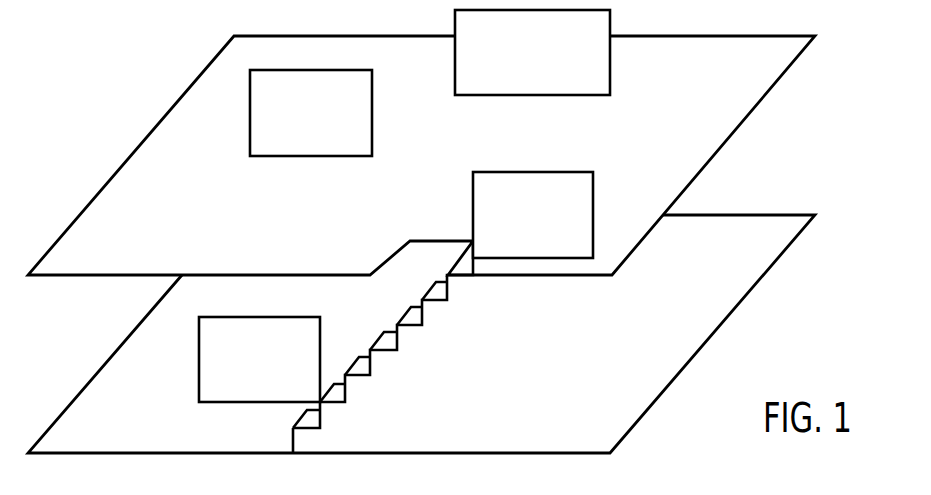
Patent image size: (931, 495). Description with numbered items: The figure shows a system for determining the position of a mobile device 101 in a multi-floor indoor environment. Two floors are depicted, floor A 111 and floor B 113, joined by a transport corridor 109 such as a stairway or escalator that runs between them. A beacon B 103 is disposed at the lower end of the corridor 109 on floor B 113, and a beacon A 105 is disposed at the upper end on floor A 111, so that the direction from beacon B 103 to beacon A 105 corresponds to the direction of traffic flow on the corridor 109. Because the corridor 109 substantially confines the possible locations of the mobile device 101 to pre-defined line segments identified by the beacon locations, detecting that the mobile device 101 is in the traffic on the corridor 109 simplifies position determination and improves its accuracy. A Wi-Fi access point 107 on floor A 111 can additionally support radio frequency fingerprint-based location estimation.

The mobile device 101 is at (365, 140).
The beacon B 103 is at (274, 386).
The beacon A 105 is at (549, 240).
The Wi-Fi access point 107 is at (579, 82).
The transport corridor 109 is at (353, 385).
The floor A 111 is at (721, 104).
The floor B 113 is at (739, 284).